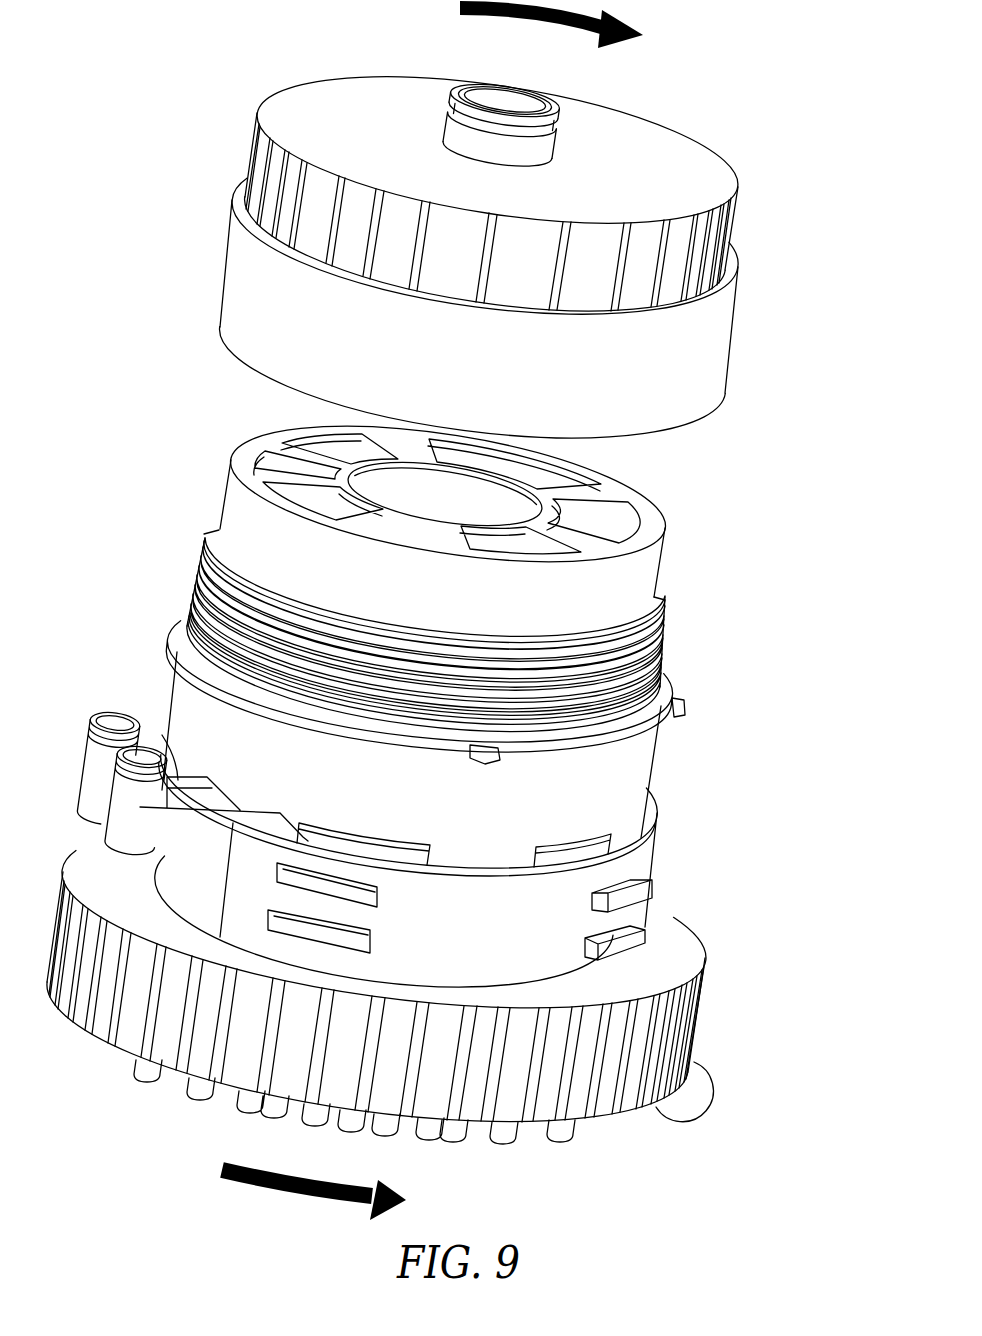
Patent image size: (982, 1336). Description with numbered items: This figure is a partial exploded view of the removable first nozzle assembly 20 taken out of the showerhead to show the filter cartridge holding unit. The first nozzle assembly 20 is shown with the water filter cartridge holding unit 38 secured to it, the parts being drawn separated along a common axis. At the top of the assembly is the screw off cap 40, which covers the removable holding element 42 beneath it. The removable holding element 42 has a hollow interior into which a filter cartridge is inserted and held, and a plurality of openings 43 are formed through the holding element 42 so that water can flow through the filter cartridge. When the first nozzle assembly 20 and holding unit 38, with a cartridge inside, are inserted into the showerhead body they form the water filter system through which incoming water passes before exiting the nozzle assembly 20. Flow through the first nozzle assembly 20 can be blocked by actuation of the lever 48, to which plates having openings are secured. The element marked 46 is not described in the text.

The first nozzle assembly 20 is at (697, 876).
The water filter cartridge holding unit 38 is at (666, 612).
The screw off cap 40 is at (720, 333).
The removable holding element 42 is at (650, 512).
The openings 43 is at (270, 480).
The boss 46 is at (476, 78).
The lever 48 is at (704, 1085).